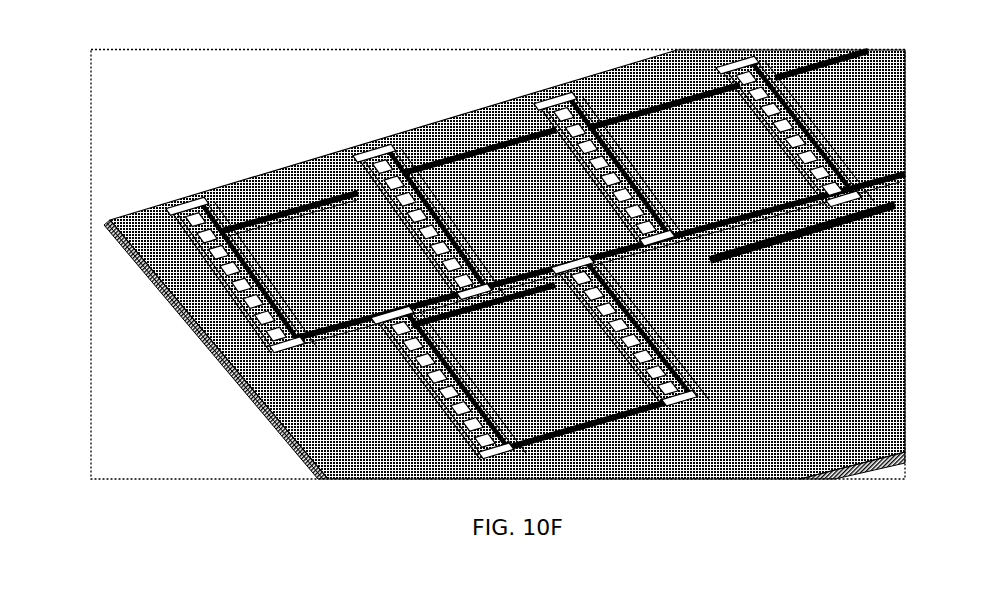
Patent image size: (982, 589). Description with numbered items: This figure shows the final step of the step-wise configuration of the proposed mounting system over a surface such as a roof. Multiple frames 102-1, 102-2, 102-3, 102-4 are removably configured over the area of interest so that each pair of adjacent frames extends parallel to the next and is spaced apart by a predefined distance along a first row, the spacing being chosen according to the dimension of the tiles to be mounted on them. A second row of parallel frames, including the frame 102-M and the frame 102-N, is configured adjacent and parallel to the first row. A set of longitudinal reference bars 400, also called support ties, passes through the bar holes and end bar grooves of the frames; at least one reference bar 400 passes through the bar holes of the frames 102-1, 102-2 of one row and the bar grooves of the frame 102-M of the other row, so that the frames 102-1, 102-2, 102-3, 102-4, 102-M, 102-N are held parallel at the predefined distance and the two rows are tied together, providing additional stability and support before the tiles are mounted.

The frame 102-1 is at (190, 197).
The frame 102-2 is at (373, 141).
The frame 102-3 is at (545, 102).
The frame 102-4 is at (742, 72).
The frame 102-M is at (413, 370).
The frame 102-N is at (673, 352).
The longitudinal reference bar 400 is at (290, 211).